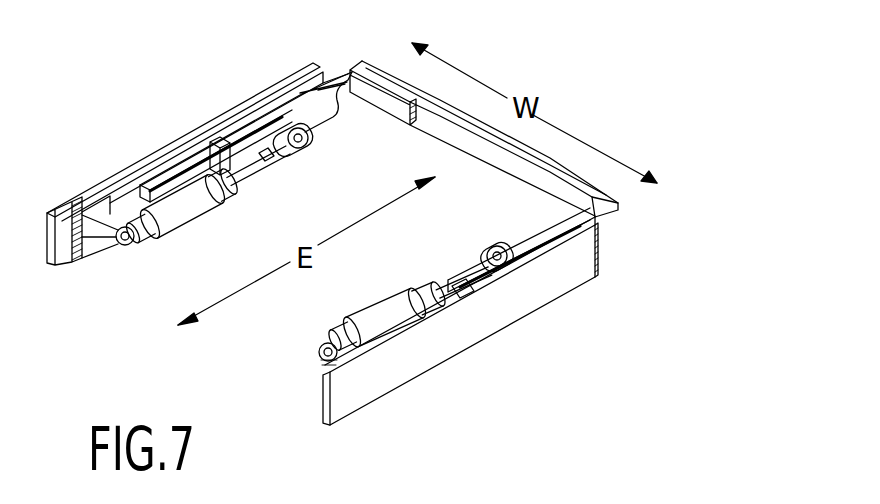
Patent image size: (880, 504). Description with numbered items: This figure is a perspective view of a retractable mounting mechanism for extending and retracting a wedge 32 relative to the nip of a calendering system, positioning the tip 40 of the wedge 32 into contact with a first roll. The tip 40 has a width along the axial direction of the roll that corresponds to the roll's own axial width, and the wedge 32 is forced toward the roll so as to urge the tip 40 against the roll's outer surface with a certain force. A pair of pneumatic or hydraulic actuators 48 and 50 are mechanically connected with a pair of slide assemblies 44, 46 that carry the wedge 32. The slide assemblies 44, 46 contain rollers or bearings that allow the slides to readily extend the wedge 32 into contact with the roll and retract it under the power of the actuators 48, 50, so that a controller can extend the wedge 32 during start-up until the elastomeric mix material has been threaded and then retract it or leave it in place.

The wedge 32 is at (607, 215).
The tip 40 is at (619, 204).
The slide assembly 44 is at (503, 270).
The guide channel 46 is at (187, 163).
The actuator 48 is at (363, 319).
The actuator 50 is at (173, 223).